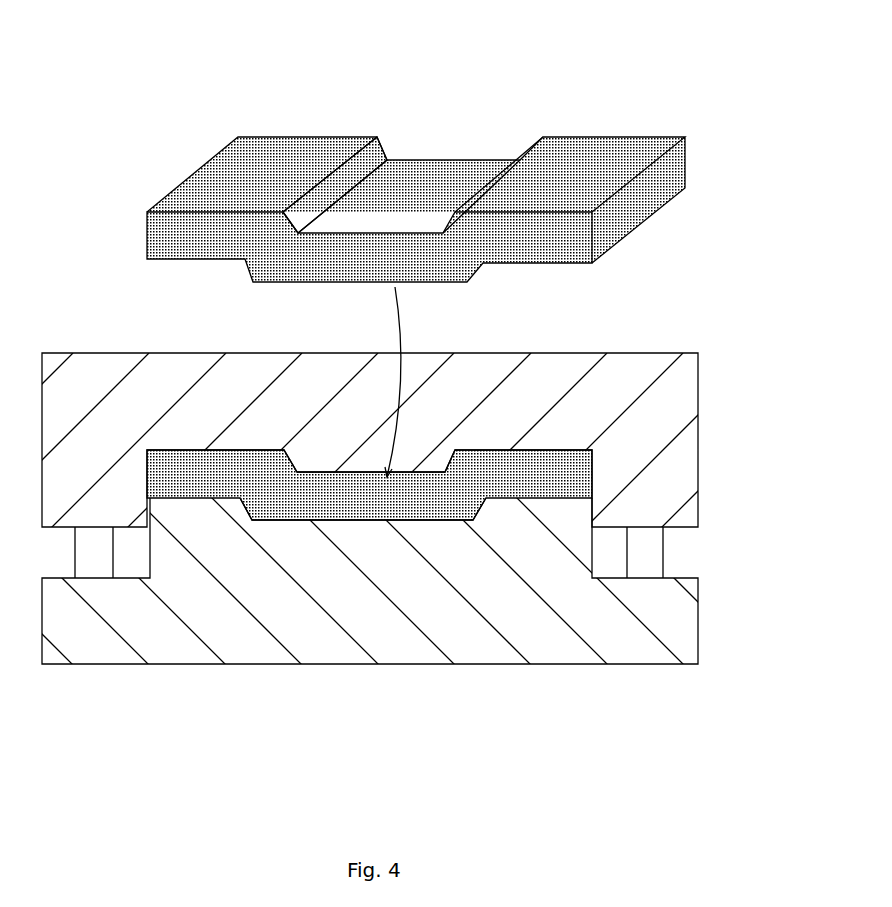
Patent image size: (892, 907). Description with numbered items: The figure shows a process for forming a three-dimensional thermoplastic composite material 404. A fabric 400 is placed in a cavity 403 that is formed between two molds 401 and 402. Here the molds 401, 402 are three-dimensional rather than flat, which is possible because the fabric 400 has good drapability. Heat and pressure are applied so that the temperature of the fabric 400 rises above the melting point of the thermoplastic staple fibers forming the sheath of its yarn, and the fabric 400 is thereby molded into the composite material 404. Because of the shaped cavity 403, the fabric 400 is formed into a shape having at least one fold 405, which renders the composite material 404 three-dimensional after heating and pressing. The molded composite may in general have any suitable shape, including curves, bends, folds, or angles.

The fabric 400 is at (488, 120).
The mold 401 is at (635, 375).
The mold 402 is at (550, 647).
The cavity 403 is at (195, 447).
The composite material 404 is at (358, 522).
The fold 405 is at (380, 138).